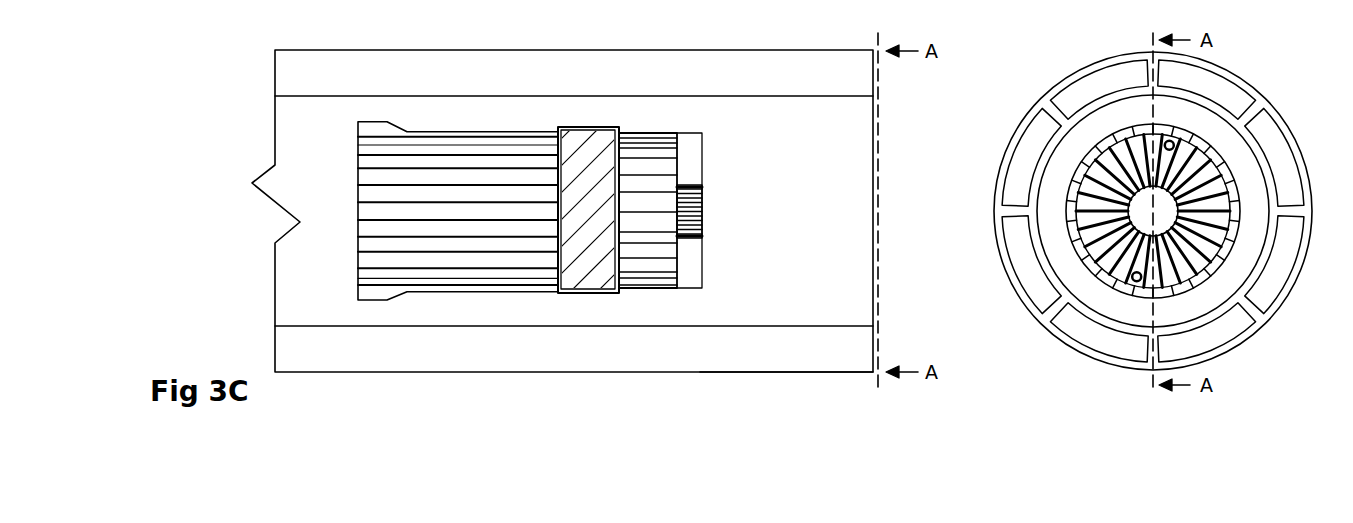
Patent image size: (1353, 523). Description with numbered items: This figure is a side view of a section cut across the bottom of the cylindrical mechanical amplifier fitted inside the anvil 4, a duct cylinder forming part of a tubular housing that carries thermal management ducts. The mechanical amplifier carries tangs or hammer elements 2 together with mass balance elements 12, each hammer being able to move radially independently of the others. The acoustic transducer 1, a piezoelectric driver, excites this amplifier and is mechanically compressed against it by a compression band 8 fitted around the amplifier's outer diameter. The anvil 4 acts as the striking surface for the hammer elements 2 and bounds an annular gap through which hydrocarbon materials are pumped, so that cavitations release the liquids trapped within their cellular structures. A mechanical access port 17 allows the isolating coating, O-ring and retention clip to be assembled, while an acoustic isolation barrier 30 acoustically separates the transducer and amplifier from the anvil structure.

The acoustic transducer 1 is at (565, 193).
The hammer elements 2 is at (370, 193).
The anvil 4 is at (372, 326).
The compression band 8 is at (583, 293).
The mass balance elements 12 is at (667, 255).
The mechanical access port 17 is at (710, 214).
The acoustic isolation barrier 30 is at (788, 372).